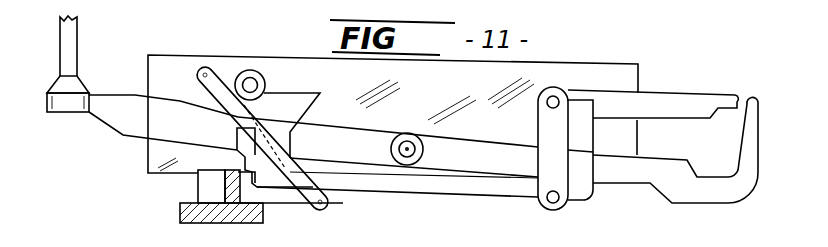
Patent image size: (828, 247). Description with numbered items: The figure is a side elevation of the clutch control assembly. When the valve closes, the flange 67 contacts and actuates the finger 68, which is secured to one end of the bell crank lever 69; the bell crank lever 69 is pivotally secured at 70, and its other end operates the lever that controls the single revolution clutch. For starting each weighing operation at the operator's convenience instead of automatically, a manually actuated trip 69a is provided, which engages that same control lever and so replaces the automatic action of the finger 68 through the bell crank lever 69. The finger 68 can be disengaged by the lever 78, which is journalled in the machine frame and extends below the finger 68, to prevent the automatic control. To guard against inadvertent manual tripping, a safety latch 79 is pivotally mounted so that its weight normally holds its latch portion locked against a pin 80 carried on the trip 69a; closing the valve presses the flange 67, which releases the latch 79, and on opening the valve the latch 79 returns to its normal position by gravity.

The flange 67 is at (200, 186).
The finger 68 is at (432, 185).
The bell crank lever 69 is at (678, 103).
The manually actuated trip 69a is at (648, 177).
The pivot 70 is at (553, 102).
The lever 78 is at (265, 135).
The safety latch 79 is at (303, 103).
The pin 80 is at (240, 137).